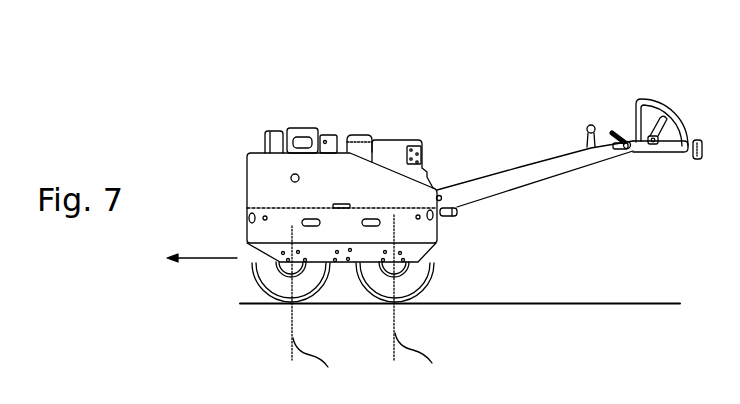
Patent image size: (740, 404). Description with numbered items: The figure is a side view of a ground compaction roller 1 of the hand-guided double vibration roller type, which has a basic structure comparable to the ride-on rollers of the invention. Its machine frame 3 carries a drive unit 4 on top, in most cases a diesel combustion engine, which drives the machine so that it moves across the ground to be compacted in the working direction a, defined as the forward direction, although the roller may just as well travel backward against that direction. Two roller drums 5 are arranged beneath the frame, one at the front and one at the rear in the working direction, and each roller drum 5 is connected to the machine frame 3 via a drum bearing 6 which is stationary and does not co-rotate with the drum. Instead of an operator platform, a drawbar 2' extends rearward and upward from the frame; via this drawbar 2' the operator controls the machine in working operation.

The ground compaction roller 1 is at (529, 134).
The drawbar 2' is at (571, 168).
The machine frame 3 is at (288, 213).
The drive unit 4 is at (281, 134).
The roller drum 5 is at (302, 280).
The drum bearing 6 is at (274, 258).